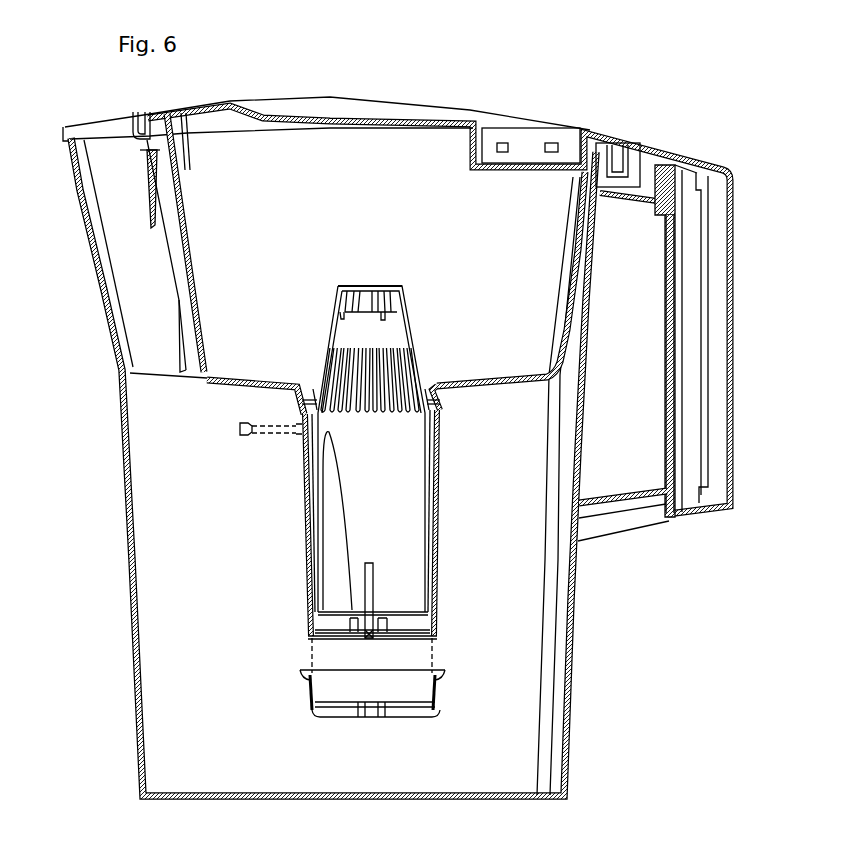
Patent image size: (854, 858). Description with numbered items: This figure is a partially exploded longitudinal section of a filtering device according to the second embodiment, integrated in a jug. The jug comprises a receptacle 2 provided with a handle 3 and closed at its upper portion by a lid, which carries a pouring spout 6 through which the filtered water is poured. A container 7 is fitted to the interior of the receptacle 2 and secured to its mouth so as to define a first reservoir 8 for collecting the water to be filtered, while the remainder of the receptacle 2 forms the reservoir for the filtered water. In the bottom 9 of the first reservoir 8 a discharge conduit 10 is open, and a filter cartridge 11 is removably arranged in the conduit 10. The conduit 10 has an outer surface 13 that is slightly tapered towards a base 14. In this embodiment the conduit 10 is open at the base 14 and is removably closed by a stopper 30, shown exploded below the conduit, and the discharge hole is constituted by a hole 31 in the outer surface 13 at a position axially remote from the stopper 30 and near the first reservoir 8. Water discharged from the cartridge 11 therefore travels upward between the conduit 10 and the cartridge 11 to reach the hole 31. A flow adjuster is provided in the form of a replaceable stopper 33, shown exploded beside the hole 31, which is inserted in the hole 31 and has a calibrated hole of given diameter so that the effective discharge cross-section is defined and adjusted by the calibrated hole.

The receptacle 2 is at (128, 603).
The handle 3 is at (735, 336).
The pouring spout 6 is at (100, 168).
The container 7 is at (198, 298).
The first reservoir 8 is at (338, 215).
The bottom 9 is at (258, 377).
The discharge conduit 10 is at (440, 628).
The filter cartridge 11 is at (427, 369).
The outer surface 13 is at (440, 510).
The base 14 is at (333, 640).
The stopper 30 is at (302, 709).
The hole 31 is at (295, 432).
The stopper 33 is at (238, 436).